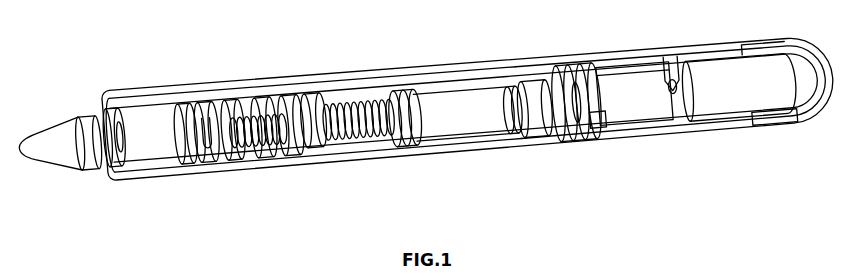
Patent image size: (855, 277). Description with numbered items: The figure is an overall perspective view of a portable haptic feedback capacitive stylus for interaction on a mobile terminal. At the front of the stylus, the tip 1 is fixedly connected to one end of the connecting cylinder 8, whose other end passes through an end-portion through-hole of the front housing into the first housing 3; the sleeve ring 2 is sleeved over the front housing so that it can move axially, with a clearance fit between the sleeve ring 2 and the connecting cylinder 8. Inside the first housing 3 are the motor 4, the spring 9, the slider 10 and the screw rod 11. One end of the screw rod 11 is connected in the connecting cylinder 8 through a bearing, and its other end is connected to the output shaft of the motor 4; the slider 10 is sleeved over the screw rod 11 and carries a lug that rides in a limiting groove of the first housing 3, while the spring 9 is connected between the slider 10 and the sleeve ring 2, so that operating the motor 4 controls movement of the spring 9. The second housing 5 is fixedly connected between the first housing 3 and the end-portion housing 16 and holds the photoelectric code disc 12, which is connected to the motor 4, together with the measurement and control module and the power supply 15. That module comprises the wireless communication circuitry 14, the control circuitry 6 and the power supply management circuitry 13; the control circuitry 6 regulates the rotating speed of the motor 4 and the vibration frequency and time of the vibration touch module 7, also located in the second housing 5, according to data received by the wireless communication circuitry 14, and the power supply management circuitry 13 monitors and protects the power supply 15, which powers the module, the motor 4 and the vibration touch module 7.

The tip 1 is at (93, 35).
The sleeve ring 2 is at (195, 35).
The first housing 3 is at (327, 35).
The motor 4 is at (495, 35).
The second housing 5 is at (548, 35).
The control circuitry 6 is at (598, 35).
The vibration touch module 7 is at (698, 35).
The connecting cylinder 8 is at (157, 220).
The spring 9 is at (260, 220).
The slider 10 is at (380, 217).
The screw rod 11 is at (452, 217).
The photoelectric code disc 12 is at (600, 215).
The power supply management circuitry 13 is at (648, 215).
The wireless communication circuitry 14 is at (715, 217).
The power supply 15 is at (795, 217).
The end-portion housing 16 is at (843, 217).